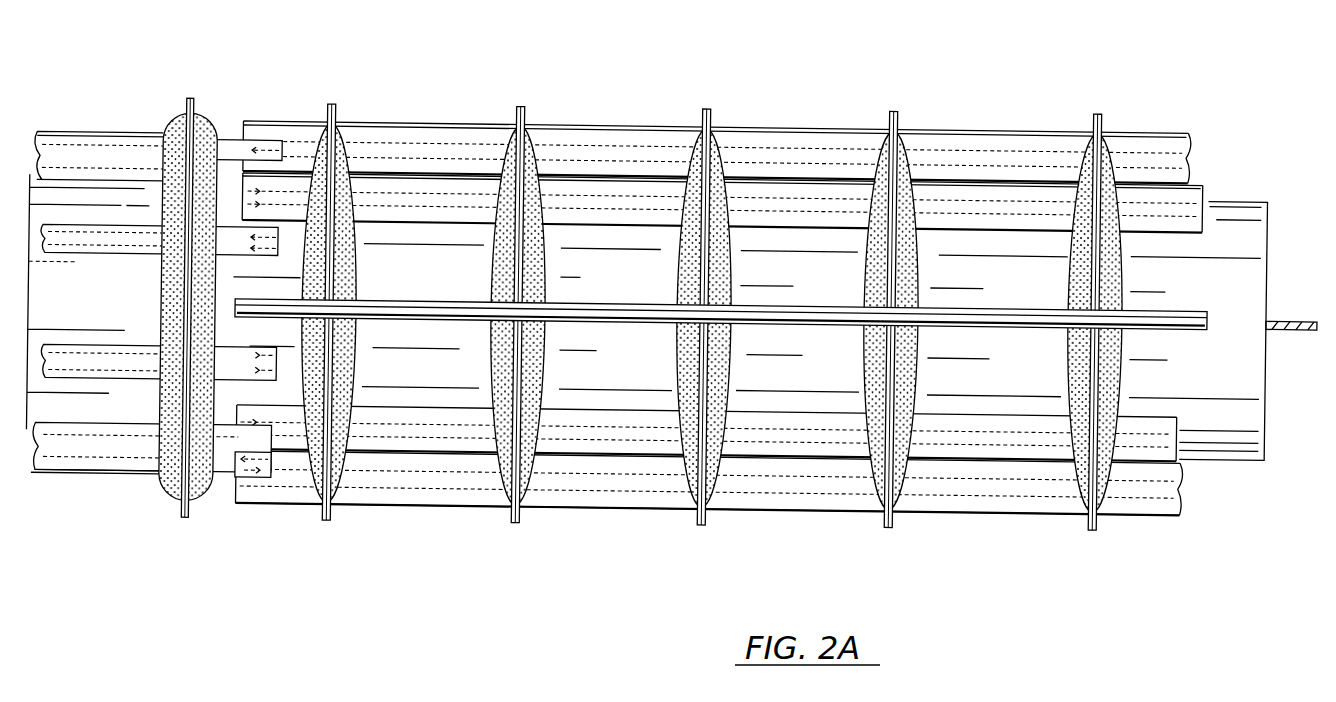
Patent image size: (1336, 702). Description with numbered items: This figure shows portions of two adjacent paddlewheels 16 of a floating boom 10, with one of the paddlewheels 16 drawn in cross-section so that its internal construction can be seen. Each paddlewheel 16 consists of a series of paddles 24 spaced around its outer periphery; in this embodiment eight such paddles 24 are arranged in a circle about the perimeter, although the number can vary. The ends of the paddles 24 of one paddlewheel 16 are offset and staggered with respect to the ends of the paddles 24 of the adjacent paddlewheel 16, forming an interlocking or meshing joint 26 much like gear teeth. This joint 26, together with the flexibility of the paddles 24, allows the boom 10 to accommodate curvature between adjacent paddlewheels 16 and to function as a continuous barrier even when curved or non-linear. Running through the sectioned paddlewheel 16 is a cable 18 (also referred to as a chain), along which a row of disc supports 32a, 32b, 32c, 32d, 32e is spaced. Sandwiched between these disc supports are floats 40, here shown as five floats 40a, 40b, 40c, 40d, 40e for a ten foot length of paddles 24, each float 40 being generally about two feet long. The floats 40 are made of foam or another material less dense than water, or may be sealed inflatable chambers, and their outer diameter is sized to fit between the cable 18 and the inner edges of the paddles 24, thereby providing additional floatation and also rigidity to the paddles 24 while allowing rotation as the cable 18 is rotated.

The boom 10 is at (675, 306).
The paddlewheel 16 is at (84, 506).
The cable 18 is at (1279, 310).
The paddle 24 is at (74, 141).
The joint 26 is at (233, 143).
The disc support 32a is at (330, 112).
The disc support 32b is at (488, 374).
The disc support 32c is at (706, 120).
The disc support 32d is at (893, 526).
The disc support 32e is at (1098, 117).
The float 40 is at (99, 318).
The float 40a is at (461, 281).
The float 40b is at (641, 388).
The float 40c is at (798, 321).
The float 40d is at (1009, 284).
The float 40e is at (1271, 163).